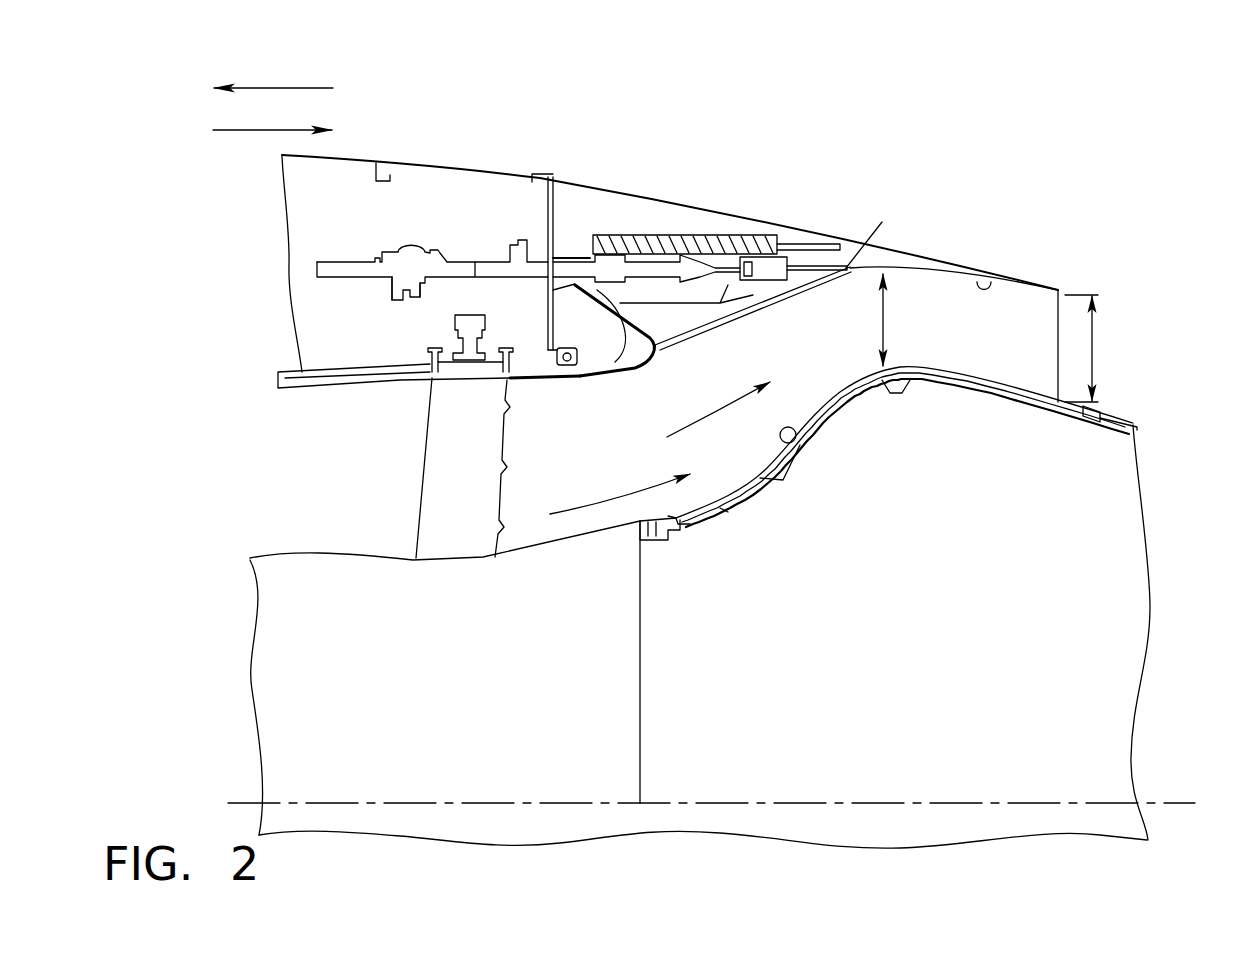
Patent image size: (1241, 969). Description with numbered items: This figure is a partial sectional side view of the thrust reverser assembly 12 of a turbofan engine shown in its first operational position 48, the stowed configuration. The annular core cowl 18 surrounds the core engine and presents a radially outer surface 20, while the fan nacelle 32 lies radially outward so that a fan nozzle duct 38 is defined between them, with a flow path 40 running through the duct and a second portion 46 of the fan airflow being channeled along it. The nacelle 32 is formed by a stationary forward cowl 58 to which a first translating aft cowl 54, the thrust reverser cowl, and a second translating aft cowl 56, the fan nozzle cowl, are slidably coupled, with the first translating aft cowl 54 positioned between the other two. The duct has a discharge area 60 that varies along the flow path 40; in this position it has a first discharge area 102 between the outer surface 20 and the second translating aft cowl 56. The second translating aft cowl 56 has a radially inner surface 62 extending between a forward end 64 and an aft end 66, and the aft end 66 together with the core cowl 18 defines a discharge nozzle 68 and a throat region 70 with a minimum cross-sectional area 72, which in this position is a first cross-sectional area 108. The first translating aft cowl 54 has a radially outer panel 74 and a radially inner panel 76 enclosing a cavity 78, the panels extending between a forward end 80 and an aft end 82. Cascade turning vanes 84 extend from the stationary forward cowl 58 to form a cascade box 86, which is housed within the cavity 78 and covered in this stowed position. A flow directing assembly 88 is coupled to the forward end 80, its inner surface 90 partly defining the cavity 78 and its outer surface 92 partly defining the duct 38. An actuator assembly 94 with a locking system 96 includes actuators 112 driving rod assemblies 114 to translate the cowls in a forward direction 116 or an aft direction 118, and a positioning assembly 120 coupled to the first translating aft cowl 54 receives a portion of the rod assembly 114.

The thrust reverser assembly 12 is at (962, 126).
The annular core cowl 18 is at (1110, 412).
The radially outer surface 20 is at (795, 446).
The fan nacelle 32 is at (652, 137).
The fan nozzle duct 38 is at (396, 463).
The flow path 40 is at (593, 507).
The second portion of airflow 46 is at (718, 418).
The first operational position 48 is at (1135, 121).
The first translating aft cowl 54 is at (662, 194).
The second translating aft cowl 56 is at (923, 257).
The stationary forward cowl 58 is at (465, 158).
The discharge area 60 is at (882, 330).
The radially inner surface 62 is at (990, 282).
The forward end 64 is at (897, 241).
The aft end 66 is at (1075, 282).
The discharge nozzle 68 is at (1111, 294).
The throat region 70 is at (1114, 329).
The minimum cross-sectional area 72 is at (1147, 348).
The radially outer panel 74 is at (757, 218).
The radially inner panel 76 is at (705, 328).
The cavity 78 is at (722, 222).
The forward end 80 is at (535, 154).
The aft end 82 is at (877, 224).
The cascade turning vanes 84 is at (640, 238).
The cascade box 86 is at (648, 223).
The flow directing assembly 88 is at (655, 362).
The inner surface 90 is at (612, 375).
The outer surface 92 is at (630, 380).
The actuator assembly 94 is at (483, 260).
The locking system 96 is at (478, 236).
The first discharge area 102 is at (925, 324).
The first cross-sectional area 108 is at (1093, 347).
The actuators 112 is at (450, 278).
The rod assemblies 114 is at (822, 246).
The forward direction 116 is at (256, 86).
The aft direction 118 is at (256, 128).
The positioning assembly 120 is at (765, 283).